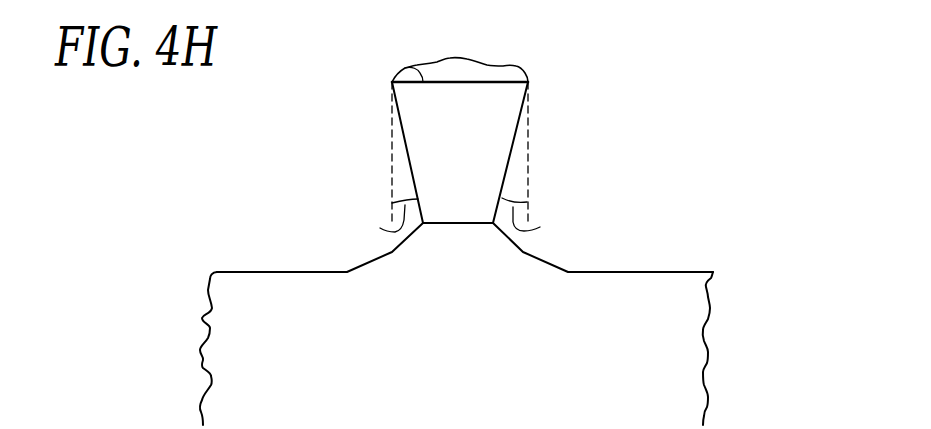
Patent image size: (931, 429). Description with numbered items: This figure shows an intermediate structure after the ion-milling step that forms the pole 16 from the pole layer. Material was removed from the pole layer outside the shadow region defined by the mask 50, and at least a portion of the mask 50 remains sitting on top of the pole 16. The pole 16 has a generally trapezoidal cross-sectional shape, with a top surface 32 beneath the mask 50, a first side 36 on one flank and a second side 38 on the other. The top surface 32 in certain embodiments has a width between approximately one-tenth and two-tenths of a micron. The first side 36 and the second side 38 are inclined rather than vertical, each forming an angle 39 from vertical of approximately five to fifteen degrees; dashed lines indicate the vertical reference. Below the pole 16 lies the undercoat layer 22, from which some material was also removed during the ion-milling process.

The pole 16 is at (492, 108).
The undercoat layer 22 is at (653, 305).
The top surface 32 is at (408, 68).
The first side 36 is at (409, 153).
The second side 38 is at (503, 180).
The angle 39 is at (380, 228).
The mask 50 is at (478, 76).